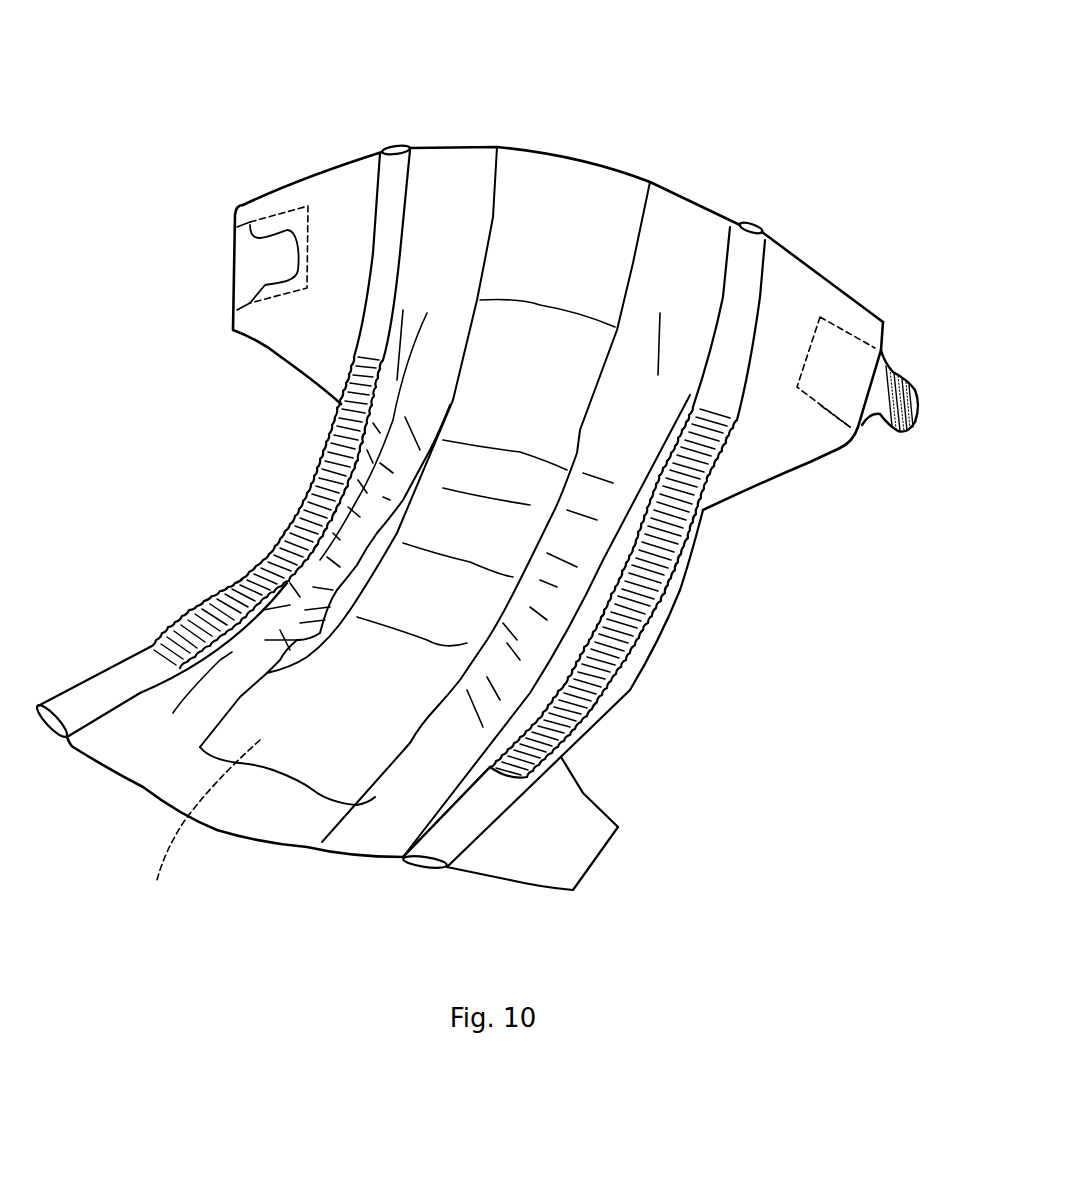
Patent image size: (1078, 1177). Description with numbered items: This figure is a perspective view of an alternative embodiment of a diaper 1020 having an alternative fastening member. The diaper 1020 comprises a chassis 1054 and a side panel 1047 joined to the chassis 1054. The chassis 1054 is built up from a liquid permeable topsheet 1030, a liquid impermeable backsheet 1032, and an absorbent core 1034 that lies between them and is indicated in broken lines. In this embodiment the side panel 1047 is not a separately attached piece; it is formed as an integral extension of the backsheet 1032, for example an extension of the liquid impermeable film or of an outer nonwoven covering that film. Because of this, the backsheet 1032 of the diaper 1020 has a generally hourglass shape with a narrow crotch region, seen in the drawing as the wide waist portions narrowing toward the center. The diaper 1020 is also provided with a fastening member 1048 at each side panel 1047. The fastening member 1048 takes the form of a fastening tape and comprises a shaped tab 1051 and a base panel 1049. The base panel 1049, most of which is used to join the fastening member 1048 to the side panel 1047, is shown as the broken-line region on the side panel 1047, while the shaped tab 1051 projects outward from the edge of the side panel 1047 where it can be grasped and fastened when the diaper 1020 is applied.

The diaper 1020 is at (611, 88).
The liquid permeable topsheet 1030 is at (363, 733).
The liquid impermeable backsheet 1032 is at (645, 637).
The absorbent core 1034 is at (191, 832).
The side panel 1047 is at (345, 192).
The fastening member 1048 is at (203, 256).
The base panel 1049 is at (823, 403).
The shaped tab 1051 is at (897, 433).
The chassis 1054 is at (264, 874).